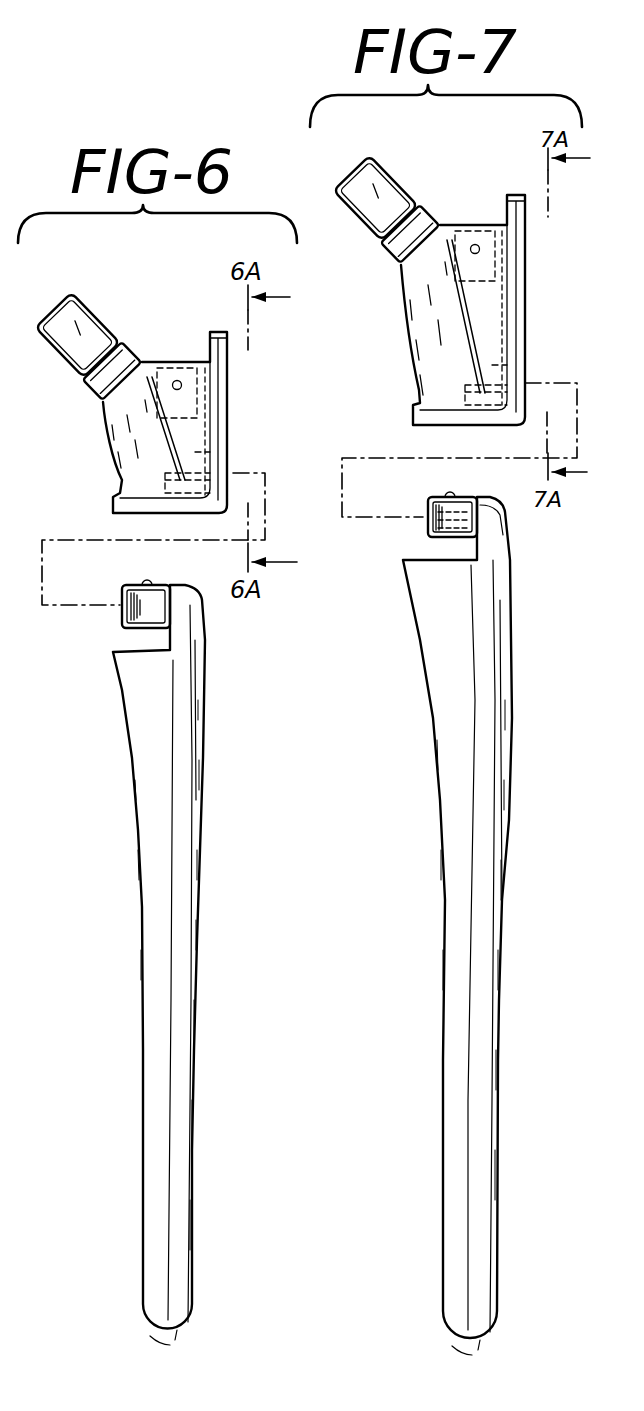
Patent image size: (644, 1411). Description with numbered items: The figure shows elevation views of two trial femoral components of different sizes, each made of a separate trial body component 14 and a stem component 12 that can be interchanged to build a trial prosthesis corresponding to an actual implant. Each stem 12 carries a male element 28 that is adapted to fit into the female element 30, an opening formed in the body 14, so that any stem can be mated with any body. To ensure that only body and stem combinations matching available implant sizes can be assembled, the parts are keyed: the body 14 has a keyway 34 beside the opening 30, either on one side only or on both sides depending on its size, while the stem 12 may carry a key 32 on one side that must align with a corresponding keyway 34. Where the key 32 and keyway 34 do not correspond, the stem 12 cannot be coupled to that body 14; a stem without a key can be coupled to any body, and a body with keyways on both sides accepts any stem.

In FIG. 6, the stem component 12 is at (145, 910).
In FIG. 7, the stem component 12 is at (452, 897).
In FIG. 6, the trial body component 14 is at (143, 360).
In FIG. 7, the trial body component 14 is at (443, 223).
In FIG. 6, the male element 28 is at (122, 613).
In FIG. 7, the male element 28 is at (428, 528).
In FIG. 6, the female element 30 is at (213, 452).
In FIG. 7, the female element 30 is at (517, 366).
In FIG. 7, the key 32 is at (475, 527).
In FIG. 6, the keyway 34 is at (180, 474).
In FIG. 7, the keyway 34 is at (460, 380).